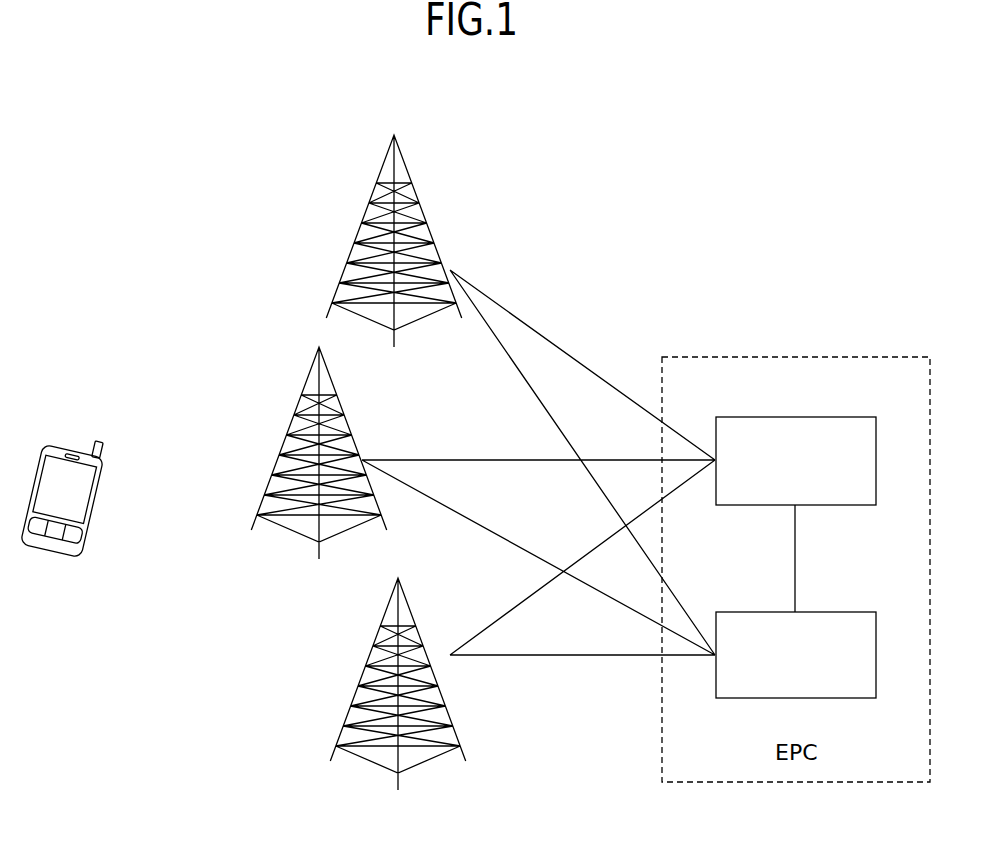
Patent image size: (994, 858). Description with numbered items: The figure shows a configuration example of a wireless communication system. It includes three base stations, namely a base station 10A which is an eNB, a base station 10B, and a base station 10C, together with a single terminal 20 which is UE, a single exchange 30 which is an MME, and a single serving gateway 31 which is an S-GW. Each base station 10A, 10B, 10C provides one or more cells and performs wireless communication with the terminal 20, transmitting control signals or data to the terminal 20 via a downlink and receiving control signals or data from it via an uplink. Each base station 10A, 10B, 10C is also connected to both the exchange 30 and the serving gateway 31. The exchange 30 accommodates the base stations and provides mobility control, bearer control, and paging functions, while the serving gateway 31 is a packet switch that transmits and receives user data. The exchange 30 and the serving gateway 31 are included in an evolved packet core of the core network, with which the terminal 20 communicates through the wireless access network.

The base station 10A is at (377, 190).
The base station 10B is at (302, 405).
The base station 10C is at (368, 670).
The terminal 20 is at (78, 442).
The exchange 30 is at (832, 417).
The serving gateway 31 is at (835, 612).